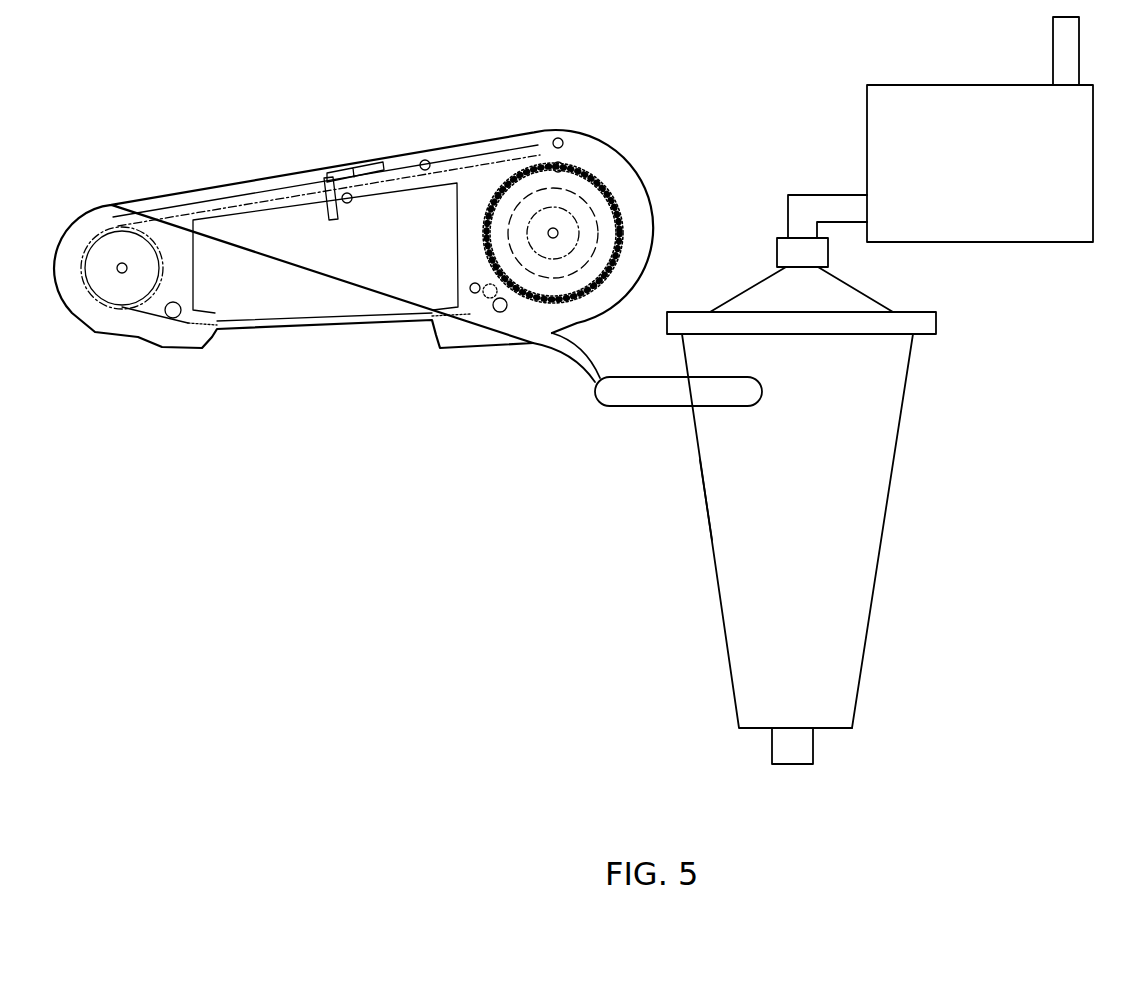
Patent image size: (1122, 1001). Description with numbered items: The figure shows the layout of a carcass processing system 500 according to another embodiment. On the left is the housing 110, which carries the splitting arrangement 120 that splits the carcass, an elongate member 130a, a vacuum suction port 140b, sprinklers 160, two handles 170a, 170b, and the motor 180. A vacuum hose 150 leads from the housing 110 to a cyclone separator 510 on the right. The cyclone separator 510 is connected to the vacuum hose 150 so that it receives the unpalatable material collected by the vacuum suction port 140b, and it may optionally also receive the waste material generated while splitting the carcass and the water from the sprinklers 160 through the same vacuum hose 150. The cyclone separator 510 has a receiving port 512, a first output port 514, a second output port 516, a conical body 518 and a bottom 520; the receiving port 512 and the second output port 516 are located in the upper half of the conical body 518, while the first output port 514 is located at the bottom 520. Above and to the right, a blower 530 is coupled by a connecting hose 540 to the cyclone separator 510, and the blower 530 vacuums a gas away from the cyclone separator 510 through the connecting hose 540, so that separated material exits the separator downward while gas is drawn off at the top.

The carcass processing system 500 is at (262, 626).
The housing 110 is at (130, 200).
The splitting arrangement 120 is at (178, 253).
The elongate member 130a is at (327, 172).
The vacuum suction port 140b is at (350, 203).
The vacuum hose 150 is at (575, 370).
The sprinklers 160 is at (478, 284).
The handle 170a is at (558, 138).
The handle 170b is at (424, 159).
The motor 180 is at (585, 192).
The cyclone separator 510 is at (912, 551).
The receiving port 512 is at (625, 406).
The first output port 514 is at (772, 740).
The second output port 516 is at (775, 250).
The conical body 518 is at (708, 530).
The bottom 520 is at (835, 730).
The blower 530 is at (859, 98).
The connecting hose 540 is at (788, 200).